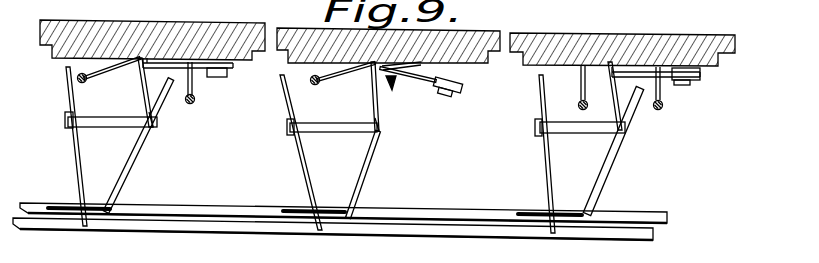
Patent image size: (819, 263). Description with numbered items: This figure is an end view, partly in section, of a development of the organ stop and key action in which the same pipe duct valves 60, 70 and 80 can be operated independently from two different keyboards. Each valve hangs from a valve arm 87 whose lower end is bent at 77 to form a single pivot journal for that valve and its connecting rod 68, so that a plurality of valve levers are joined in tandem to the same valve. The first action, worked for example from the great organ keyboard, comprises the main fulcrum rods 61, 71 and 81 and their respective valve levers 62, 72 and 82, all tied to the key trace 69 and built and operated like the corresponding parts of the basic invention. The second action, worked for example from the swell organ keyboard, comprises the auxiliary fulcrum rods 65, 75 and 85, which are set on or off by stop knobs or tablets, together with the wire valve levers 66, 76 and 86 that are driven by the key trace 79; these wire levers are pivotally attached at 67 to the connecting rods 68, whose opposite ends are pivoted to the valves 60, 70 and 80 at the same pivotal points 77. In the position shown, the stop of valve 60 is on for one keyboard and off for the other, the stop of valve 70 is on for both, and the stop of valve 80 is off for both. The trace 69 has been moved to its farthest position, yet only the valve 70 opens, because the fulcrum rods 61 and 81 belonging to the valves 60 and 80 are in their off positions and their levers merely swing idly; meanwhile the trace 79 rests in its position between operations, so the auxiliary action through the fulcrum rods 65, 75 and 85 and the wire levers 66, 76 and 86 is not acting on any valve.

The pipe duct valve 60 is at (196, 72).
The main fulcrum rod 61 is at (193, 103).
The valve lever 62 is at (124, 185).
The auxiliary fulcrum rod 65 is at (87, 82).
The valve lever 66 is at (79, 172).
The pivotal attachment 67 is at (65, 118).
The connecting rod 68 is at (129, 130).
The key trace 69 is at (228, 207).
The pipe duct valve 70 is at (418, 88).
The main fulcrum rod 71 is at (392, 90).
The valve lever 72 is at (353, 186).
The auxiliary fulcrum rod 75 is at (318, 84).
The valve lever 76 is at (303, 169).
The pivotal point 77 is at (154, 128).
The key trace 79 is at (172, 228).
The pipe duct valve 80 is at (665, 78).
The main fulcrum rod 81 is at (664, 108).
The valve lever 82 is at (595, 191).
The auxiliary fulcrum rod 85 is at (580, 104).
The valve lever 86 is at (546, 171).
The valve arm 87 is at (150, 104).